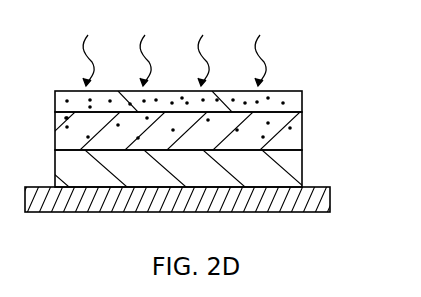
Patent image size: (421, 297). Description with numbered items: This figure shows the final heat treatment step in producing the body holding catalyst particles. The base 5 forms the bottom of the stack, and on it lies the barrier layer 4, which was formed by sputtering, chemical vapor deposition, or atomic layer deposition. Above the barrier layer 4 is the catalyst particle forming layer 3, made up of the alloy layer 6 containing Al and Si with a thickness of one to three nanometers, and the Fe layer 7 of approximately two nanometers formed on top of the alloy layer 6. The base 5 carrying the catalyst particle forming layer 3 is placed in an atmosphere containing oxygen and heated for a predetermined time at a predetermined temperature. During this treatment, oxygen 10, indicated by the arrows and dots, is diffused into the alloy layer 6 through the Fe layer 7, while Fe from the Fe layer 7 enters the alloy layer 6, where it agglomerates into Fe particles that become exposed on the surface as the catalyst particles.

The catalyst particle forming layer 3 is at (213, 116).
The barrier layer 4 is at (302, 170).
The base 5 is at (330, 192).
The alloy layer 6 is at (302, 131).
The Fe layer 7 is at (302, 100).
The oxygen 10 is at (62, 117).